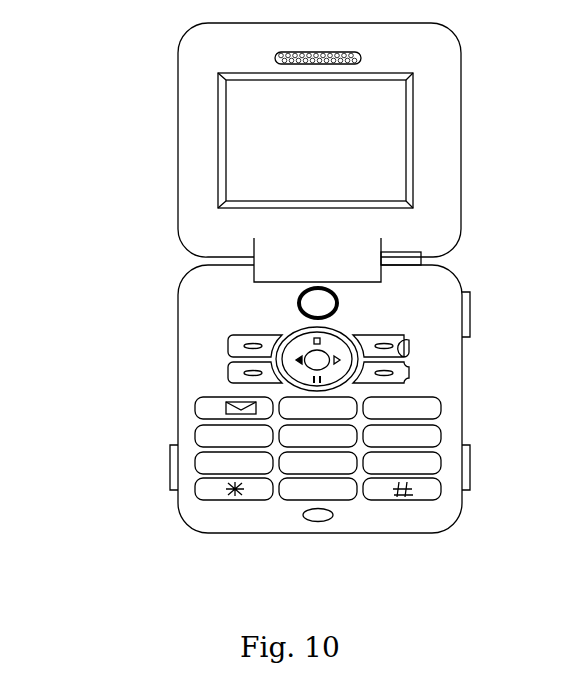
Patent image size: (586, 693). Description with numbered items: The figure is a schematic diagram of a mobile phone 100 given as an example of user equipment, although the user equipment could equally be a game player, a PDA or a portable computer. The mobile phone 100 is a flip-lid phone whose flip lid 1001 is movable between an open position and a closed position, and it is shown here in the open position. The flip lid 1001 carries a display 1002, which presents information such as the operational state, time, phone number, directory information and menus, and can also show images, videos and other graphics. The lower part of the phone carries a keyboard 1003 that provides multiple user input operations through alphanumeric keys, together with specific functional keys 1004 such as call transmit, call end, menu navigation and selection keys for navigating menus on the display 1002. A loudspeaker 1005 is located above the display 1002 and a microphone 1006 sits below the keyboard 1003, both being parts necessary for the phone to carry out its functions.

The mobile phone 100 is at (291, 298).
The flip lid 1001 is at (177, 172).
The display 1002 is at (233, 152).
The keyboard 1003 is at (250, 506).
The specific functional keys 1004 is at (313, 359).
The loudspeaker 1005 is at (362, 58).
The microphone 1006 is at (320, 523).